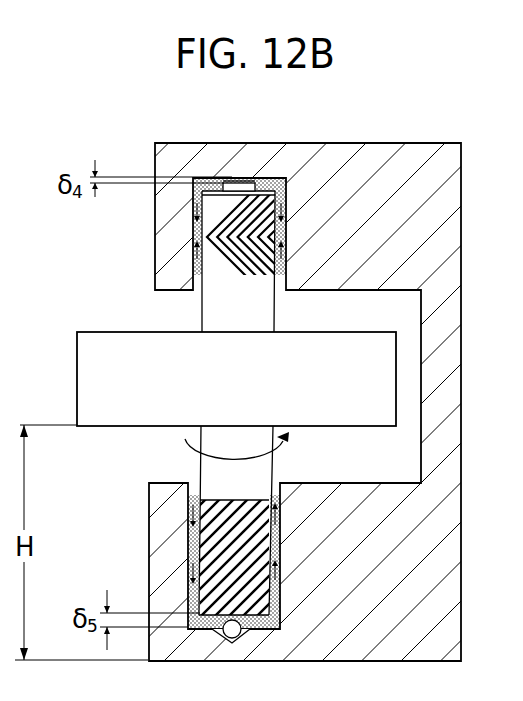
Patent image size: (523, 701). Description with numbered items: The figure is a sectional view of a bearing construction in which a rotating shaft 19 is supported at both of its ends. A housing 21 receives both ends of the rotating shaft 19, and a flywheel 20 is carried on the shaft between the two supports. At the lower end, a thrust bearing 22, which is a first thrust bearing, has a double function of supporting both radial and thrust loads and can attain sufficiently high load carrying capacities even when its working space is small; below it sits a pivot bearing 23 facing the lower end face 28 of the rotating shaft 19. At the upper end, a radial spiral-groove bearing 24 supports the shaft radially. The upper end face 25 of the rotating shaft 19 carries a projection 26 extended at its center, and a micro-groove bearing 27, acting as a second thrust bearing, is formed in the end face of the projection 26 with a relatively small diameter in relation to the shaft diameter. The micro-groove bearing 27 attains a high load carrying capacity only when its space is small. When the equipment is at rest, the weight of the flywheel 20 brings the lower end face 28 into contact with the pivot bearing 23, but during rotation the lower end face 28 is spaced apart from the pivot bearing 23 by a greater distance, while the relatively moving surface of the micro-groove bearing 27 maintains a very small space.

The rotating shaft 19 is at (210, 316).
The flywheel 20 is at (388, 365).
The housing 21 is at (440, 552).
The thrust bearing 22 is at (258, 547).
The pivot bearing 23 is at (228, 637).
The radial spiral-groove bearing 24 is at (258, 218).
The upper end face of the rotating shaft 25 is at (268, 183).
The projection 26 is at (243, 181).
The micro-groove bearing 27 is at (230, 180).
The lower end face of the rotating shaft 28 is at (257, 629).